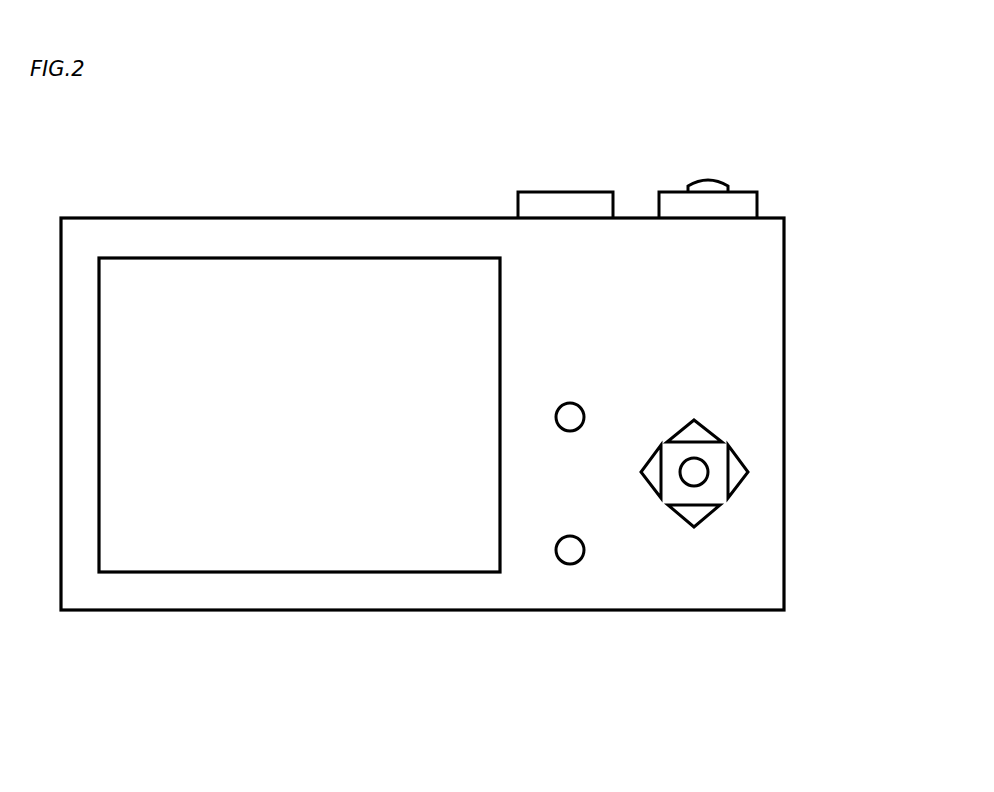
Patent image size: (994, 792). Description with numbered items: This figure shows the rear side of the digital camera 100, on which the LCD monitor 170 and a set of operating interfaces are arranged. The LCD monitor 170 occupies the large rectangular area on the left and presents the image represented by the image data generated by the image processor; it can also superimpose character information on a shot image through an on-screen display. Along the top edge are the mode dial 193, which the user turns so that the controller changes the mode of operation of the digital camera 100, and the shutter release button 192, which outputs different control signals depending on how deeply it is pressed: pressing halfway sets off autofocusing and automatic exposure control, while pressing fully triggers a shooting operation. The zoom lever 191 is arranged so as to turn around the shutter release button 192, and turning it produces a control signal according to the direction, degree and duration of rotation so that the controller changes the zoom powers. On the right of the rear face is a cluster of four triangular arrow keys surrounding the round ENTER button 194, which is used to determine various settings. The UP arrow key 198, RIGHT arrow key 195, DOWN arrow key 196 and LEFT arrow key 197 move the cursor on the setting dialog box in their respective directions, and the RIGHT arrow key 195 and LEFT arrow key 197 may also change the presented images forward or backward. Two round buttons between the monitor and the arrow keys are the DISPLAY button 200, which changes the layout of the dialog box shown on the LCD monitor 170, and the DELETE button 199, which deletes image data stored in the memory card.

The digital camera 100 is at (183, 190).
The LCD monitor 170 is at (160, 280).
The zoom lever 191 is at (745, 190).
The shutter release button 192 is at (707, 181).
The mode dial 193 is at (557, 190).
The ENTER button 194 is at (694, 472).
The RIGHT arrow key 195 is at (735, 470).
The DOWN arrow key 196 is at (695, 511).
The LEFT arrow key 197 is at (655, 488).
The UP arrow key 198 is at (692, 428).
The DELETE button 199 is at (572, 545).
The DISPLAY button 200 is at (569, 413).